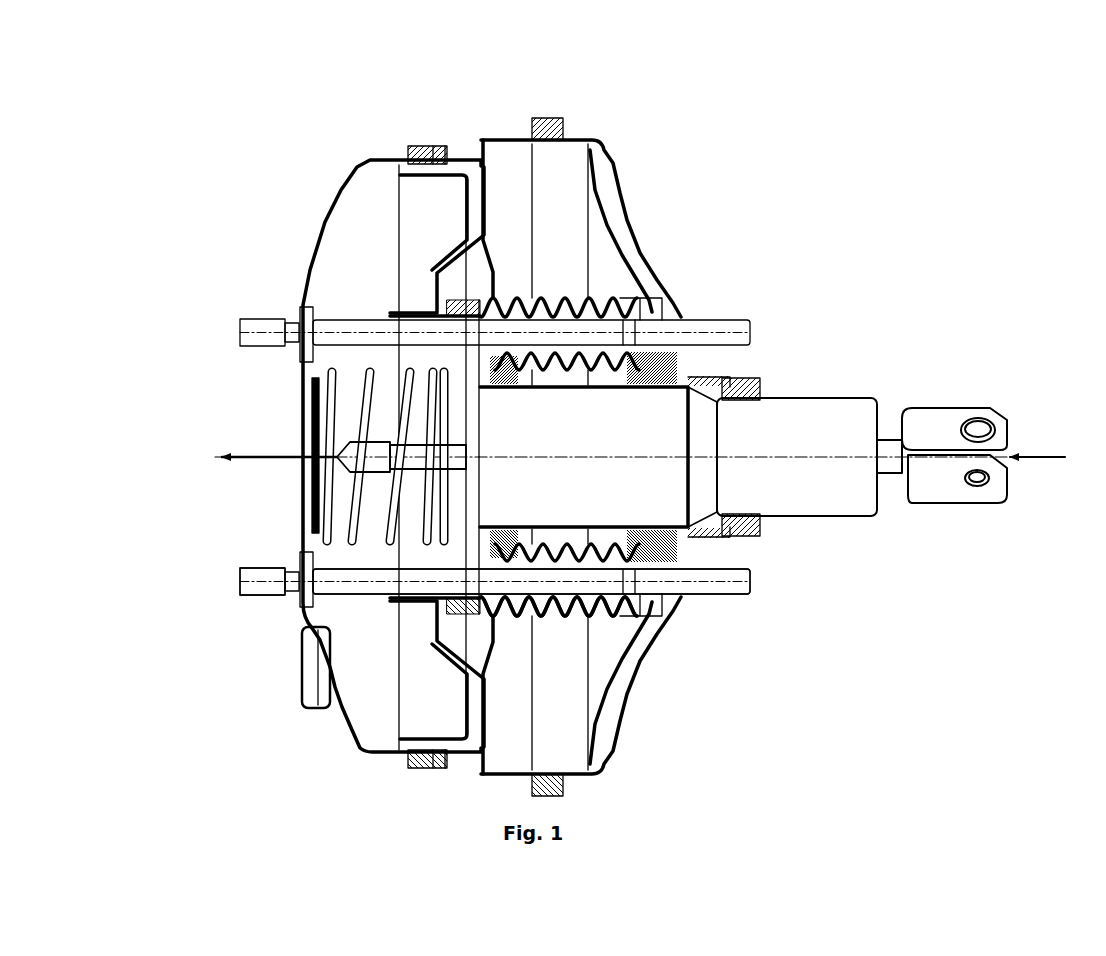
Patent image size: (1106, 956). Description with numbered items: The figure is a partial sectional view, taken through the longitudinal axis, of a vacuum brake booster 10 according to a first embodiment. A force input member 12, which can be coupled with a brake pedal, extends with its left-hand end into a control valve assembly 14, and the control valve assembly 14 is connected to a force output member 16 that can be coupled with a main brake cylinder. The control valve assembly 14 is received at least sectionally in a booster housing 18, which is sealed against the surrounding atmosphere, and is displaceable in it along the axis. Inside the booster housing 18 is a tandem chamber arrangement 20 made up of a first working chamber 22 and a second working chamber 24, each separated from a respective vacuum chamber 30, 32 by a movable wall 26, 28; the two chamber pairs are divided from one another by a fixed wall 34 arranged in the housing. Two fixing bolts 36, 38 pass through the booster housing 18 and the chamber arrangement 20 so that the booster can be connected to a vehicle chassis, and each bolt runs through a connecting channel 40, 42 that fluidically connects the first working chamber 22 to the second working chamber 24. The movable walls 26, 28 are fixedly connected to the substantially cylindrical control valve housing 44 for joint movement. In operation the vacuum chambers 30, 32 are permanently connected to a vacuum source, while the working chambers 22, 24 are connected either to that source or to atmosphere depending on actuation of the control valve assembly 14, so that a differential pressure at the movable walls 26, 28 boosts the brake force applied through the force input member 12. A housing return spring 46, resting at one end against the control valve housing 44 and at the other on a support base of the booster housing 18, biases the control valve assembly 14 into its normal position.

The vacuum brake booster 10 is at (897, 148).
The force input member 12 is at (930, 417).
The control valve assembly 14 is at (823, 382).
The force output member 16 is at (372, 447).
The booster housing 18 is at (590, 140).
The chamber arrangement 20 is at (414, 118).
The first working chamber 22 is at (629, 249).
The second working chamber 24 is at (460, 625).
The movable wall 26 is at (610, 167).
The movable wall 28 is at (428, 272).
The vacuum chamber 30 is at (505, 170).
The vacuum chamber 32 is at (364, 681).
The fixed wall 34 is at (478, 218).
The fixing bolt 36 is at (298, 325).
The fixing bolt 38 is at (300, 585).
The connecting channel 40 is at (587, 300).
The connecting channel 42 is at (587, 617).
The control valve housing 44 is at (822, 518).
The housing return spring 46 is at (326, 510).